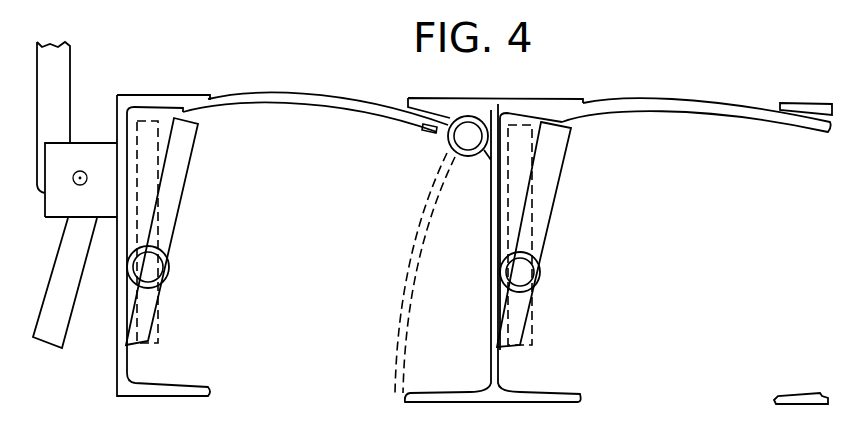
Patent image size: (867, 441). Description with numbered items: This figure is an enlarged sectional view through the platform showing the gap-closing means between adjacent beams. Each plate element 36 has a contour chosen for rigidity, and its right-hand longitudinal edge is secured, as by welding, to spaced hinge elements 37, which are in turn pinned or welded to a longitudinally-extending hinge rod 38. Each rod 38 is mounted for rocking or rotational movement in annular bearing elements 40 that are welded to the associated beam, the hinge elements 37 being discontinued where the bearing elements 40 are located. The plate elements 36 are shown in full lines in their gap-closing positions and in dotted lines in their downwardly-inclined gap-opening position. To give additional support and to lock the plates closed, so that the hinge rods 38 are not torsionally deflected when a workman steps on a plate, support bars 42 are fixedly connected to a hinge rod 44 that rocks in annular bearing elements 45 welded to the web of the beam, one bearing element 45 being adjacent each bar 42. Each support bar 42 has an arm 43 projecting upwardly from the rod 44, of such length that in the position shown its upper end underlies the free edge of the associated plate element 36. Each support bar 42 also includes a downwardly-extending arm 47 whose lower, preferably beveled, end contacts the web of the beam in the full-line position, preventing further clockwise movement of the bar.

The plate element 36 is at (313, 92).
The hinge element 37 is at (432, 132).
The hinge rod 38 is at (468, 139).
The annular bearing element 40 is at (447, 139).
The support bar 42 is at (180, 158).
The arm 43 is at (172, 193).
The hinge rod 44 is at (150, 263).
The annular bearing element 45 is at (163, 280).
The downwardly-extending arm 47 is at (128, 320).